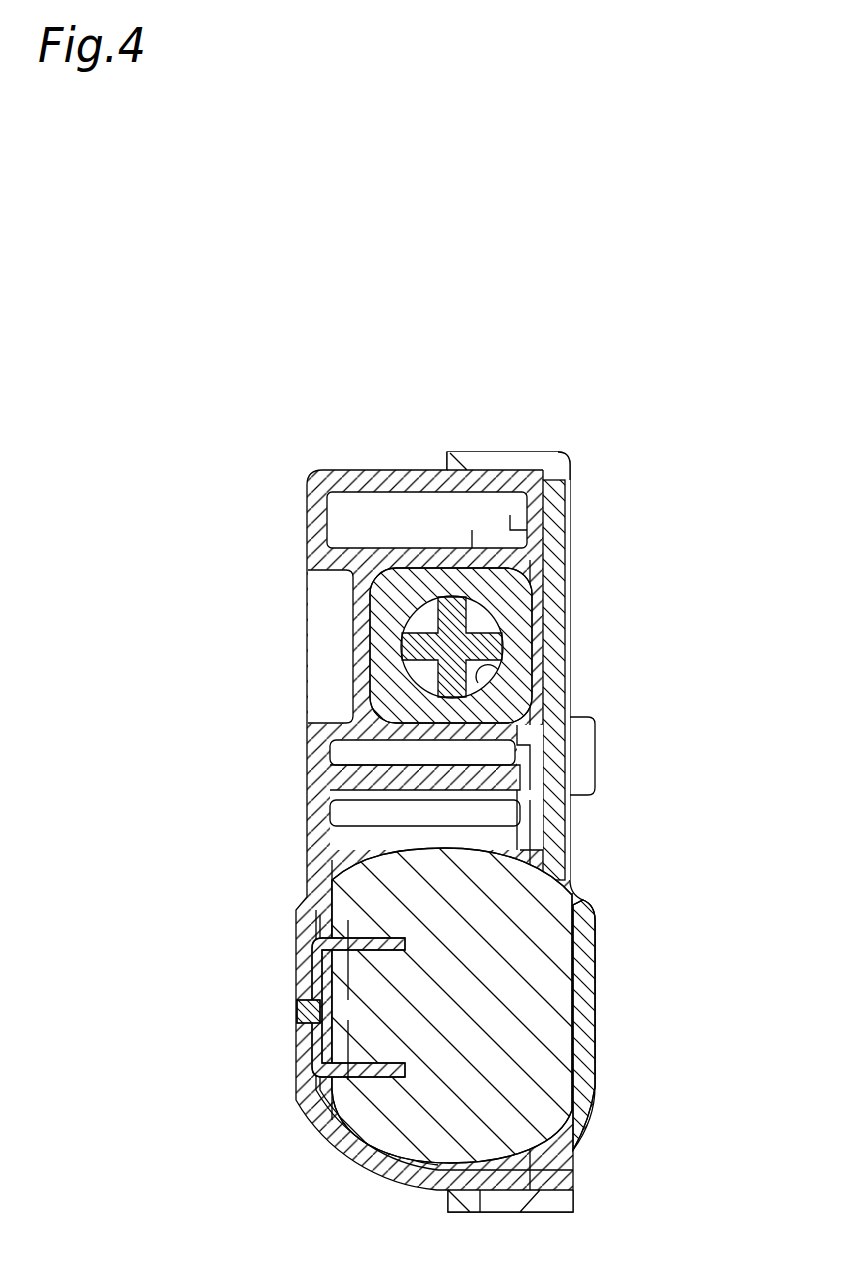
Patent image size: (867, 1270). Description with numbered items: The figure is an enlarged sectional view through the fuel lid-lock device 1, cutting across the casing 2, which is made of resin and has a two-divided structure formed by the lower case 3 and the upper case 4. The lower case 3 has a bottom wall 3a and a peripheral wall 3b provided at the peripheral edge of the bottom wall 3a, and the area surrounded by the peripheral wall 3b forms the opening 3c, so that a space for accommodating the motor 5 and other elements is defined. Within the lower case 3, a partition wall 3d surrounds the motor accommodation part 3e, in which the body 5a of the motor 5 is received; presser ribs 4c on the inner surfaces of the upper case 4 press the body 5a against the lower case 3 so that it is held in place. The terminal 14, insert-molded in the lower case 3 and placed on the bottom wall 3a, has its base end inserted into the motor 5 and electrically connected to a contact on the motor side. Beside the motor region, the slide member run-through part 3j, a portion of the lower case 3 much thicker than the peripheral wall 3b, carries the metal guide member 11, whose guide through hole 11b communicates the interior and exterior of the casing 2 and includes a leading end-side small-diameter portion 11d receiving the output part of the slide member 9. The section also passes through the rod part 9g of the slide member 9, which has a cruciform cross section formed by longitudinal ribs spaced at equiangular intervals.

The fuel lid-lock device 1 is at (722, 260).
The casing 2 is at (660, 386).
The lower case 3 is at (507, 478).
The upper case 4 is at (557, 512).
The bottom wall 3a is at (318, 526).
The peripheral wall 3b is at (398, 478).
The opening 3c is at (563, 1160).
The partition wall 3d is at (340, 768).
The motor accommodation part 3e is at (342, 878).
The slide member run-through part 3j is at (357, 597).
The presser ribs 4c is at (580, 918).
The motor 5 is at (523, 1005).
The body 5a is at (560, 1030).
The slide member 9 is at (548, 625).
The rod part 9g is at (466, 642).
The guide member 11 is at (532, 652).
The guide through hole 11b is at (609, 688).
The small-diameter portion 11d is at (494, 672).
The terminal 14 is at (305, 1010).